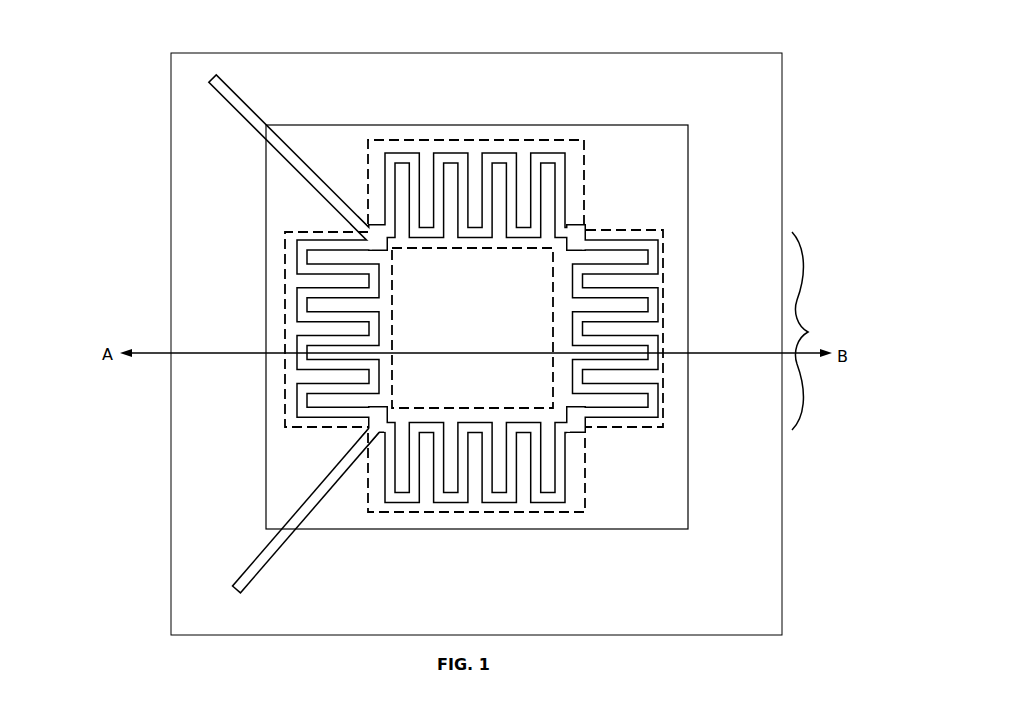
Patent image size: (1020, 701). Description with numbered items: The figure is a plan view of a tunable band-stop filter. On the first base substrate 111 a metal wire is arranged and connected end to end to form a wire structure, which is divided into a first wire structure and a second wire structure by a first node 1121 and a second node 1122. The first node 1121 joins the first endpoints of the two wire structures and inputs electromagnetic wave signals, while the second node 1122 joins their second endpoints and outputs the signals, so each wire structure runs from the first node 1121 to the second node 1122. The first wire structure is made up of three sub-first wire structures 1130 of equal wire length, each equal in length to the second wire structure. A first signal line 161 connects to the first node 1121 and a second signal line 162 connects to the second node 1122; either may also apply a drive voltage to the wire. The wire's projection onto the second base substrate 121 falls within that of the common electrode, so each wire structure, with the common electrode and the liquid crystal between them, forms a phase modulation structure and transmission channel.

The second base substrate 121 is at (476, 319).
The first base substrate 111 is at (481, 367).
The sub-first wire structure 1130 is at (634, 386).
The first node 1121 is at (246, 274).
The second node 1122 is at (250, 460).
The first signal line 161 is at (293, 137).
The second signal line 162 is at (306, 529).